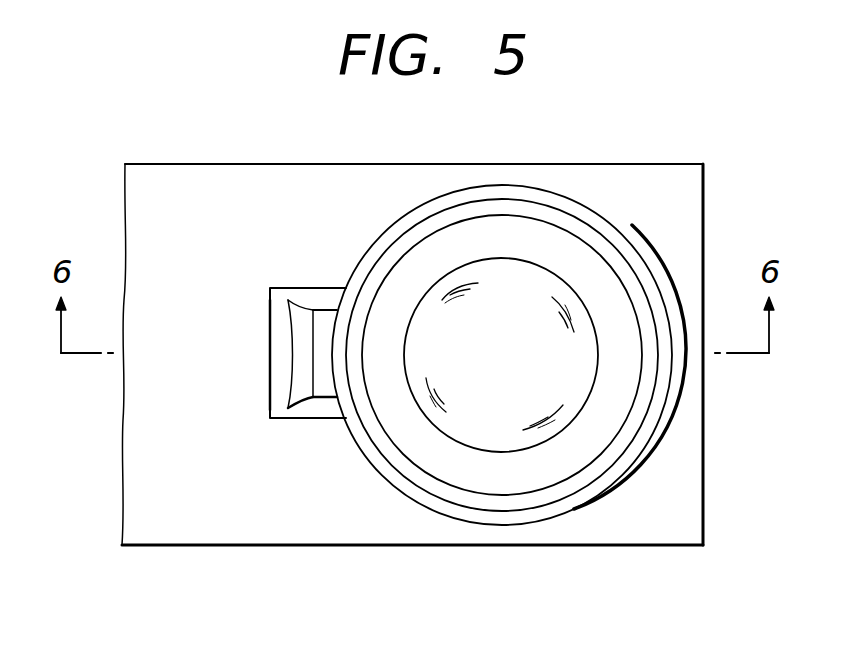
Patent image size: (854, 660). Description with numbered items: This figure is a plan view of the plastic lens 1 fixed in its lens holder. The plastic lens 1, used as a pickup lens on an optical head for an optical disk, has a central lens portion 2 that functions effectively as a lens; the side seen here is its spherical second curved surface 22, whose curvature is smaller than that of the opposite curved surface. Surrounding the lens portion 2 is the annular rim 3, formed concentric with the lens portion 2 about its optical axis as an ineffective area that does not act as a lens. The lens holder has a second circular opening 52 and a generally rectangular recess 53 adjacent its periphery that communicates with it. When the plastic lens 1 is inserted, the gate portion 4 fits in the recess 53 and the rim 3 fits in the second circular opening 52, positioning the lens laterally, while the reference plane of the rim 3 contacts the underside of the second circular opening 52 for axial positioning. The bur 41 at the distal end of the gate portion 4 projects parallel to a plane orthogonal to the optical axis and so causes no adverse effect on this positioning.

The plastic lens 1 is at (641, 461).
The lens portion 2 is at (503, 327).
The rim 3 is at (598, 296).
The gate portion 4 is at (325, 327).
The second curved surface 22 is at (477, 333).
The bur 41 is at (292, 303).
The second circular opening 52 is at (565, 511).
The recess 53 is at (270, 390).